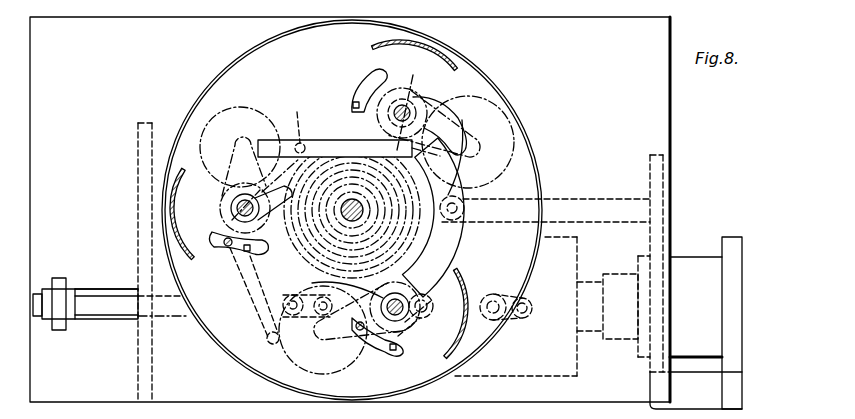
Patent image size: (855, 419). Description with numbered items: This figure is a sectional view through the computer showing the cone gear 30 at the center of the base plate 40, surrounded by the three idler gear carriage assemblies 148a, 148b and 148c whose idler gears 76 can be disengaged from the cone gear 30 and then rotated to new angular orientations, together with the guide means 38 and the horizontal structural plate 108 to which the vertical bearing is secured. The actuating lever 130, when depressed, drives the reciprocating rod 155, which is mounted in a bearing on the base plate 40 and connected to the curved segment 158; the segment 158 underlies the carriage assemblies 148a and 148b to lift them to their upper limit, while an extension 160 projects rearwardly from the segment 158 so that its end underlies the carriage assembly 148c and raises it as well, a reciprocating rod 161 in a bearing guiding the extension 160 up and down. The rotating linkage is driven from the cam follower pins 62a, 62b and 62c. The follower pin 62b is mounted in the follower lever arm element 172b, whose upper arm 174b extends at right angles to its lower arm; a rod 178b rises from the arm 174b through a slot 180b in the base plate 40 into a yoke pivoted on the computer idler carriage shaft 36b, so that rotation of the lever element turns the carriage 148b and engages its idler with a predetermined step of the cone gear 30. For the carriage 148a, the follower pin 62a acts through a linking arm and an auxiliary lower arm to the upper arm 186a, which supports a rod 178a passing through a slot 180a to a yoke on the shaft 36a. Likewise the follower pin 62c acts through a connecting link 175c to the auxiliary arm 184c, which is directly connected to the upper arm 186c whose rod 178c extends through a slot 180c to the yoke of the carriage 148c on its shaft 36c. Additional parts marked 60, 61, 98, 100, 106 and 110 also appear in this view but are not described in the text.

The cone gear 30 is at (412, 228).
The computer idler carriage shaft 36a is at (410, 113).
The computer idler carriage shaft 36b is at (393, 299).
The pivot pin 36c is at (259, 207).
The guide means 38 is at (458, 67).
The base plate 40 is at (546, 165).
The shaft 60 is at (95, 305).
The housing wall 61 is at (730, 240).
The follower pin 62a is at (518, 318).
The follower pin 62b is at (430, 302).
The follower pin 62c is at (307, 325).
The idler gears 76 is at (244, 104).
The nut 98 is at (58, 278).
The end cap 100 is at (35, 300).
The sleeve 106 is at (103, 289).
The horizontal structural plate 108 is at (665, 112).
The bearing plate 110 is at (138, 174).
The actuating lever 130 is at (660, 183).
The idler gear carriage assembly 148a is at (437, 98).
The idler gear carriage assembly 148b is at (357, 329).
The idler gear carriage assembly 148c is at (234, 157).
The rod 155 is at (468, 202).
The curved segment 158 is at (455, 146).
The extension 160 is at (340, 141).
The reciprocating rod 161 is at (288, 148).
The follower lever arm element 172b is at (404, 336).
The upper arm 174b is at (407, 322).
The connecting link 175c is at (262, 330).
The rod 178a is at (353, 104).
The rod 178b is at (390, 351).
The rod 178c is at (250, 253).
The slot 180a is at (372, 82).
The slot 180b is at (378, 357).
The slot 180c is at (218, 250).
The auxiliary arm 184c is at (226, 204).
The upper arm 186a is at (417, 105).
The upper arm 186c is at (268, 216).